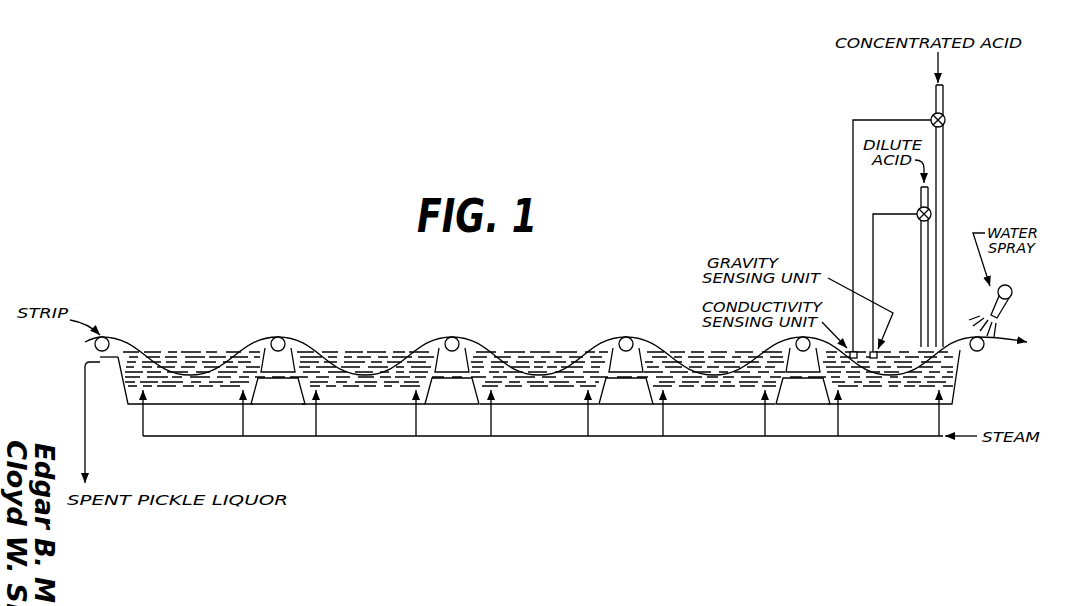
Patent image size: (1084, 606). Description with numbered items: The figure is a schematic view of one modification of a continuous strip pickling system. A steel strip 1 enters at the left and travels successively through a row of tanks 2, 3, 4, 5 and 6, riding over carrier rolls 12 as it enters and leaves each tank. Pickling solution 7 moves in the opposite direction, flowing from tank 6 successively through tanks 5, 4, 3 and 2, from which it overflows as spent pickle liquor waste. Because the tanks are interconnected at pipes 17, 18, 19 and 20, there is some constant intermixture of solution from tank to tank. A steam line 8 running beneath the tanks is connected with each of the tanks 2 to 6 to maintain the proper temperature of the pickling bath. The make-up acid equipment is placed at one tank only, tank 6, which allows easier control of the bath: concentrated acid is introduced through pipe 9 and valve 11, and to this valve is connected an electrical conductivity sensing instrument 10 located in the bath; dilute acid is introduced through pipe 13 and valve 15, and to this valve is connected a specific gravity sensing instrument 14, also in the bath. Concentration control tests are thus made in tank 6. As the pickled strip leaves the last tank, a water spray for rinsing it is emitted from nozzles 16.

The steel strip 1 is at (297, 337).
The tank 2 is at (173, 404).
The tank 3 is at (351, 404).
The tank 4 is at (523, 404).
The tank 5 is at (691, 404).
The tank 6 is at (871, 404).
The pickling solution 7 is at (533, 352).
The steam line 8 is at (635, 437).
The pipe 9 is at (935, 97).
The electrical conductivity sensing instrument 10 is at (855, 351).
The valve 11 is at (947, 125).
The carrier rolls 12 is at (540, 360).
The pipe 13 is at (920, 193).
The specific gravity sensing instrument 14 is at (880, 350).
The valve 15 is at (918, 221).
The nozzles 16 is at (1013, 289).
The pipe 17 is at (290, 383).
The pipe 18 is at (466, 383).
The pipe 19 is at (640, 383).
The pipe 20 is at (815, 382).